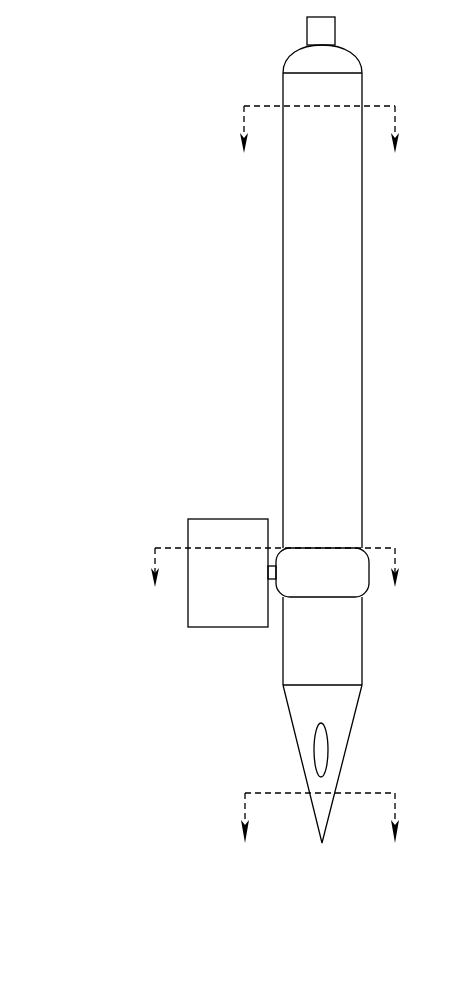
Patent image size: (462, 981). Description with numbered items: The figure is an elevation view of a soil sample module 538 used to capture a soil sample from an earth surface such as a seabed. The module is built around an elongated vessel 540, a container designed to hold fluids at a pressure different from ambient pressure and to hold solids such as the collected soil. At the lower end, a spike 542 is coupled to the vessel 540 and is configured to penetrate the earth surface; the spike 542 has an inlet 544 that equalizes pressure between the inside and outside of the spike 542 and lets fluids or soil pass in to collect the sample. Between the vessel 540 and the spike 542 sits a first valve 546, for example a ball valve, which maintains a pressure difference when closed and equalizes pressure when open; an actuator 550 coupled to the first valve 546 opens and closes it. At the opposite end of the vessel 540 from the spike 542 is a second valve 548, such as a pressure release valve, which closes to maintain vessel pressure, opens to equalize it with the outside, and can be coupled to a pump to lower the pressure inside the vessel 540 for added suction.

The soil sample module 538 is at (136, 66).
The vessel 540 is at (283, 294).
The spike 542 is at (288, 709).
The inlet 544 is at (328, 750).
The first valve 546 is at (366, 589).
The second valve 548 is at (337, 23).
The actuator 550 is at (231, 519).